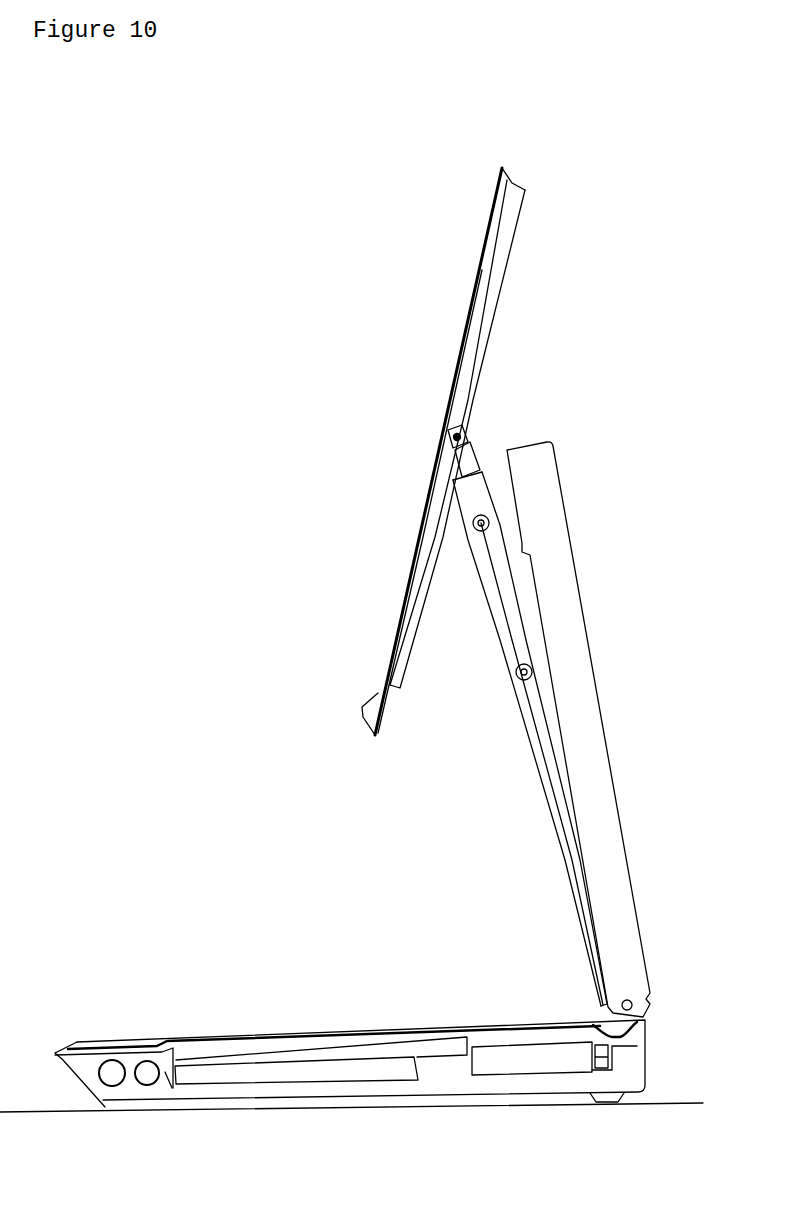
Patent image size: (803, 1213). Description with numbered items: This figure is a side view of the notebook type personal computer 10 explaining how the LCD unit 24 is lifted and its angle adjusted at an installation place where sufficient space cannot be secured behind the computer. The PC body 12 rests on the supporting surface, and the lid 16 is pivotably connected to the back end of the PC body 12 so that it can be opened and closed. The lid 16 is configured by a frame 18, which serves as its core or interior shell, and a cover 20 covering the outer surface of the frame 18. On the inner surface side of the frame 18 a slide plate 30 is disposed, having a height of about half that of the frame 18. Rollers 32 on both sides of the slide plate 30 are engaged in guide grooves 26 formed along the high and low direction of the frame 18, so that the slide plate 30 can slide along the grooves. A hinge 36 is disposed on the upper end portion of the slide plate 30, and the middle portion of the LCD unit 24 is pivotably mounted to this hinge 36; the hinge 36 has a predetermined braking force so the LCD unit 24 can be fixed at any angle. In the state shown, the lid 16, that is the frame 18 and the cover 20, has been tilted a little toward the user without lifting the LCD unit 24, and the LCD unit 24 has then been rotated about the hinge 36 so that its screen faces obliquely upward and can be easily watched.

The notebook type personal computer 10 is at (274, 283).
The PC body 12 is at (432, 1092).
The lid 16 is at (532, 417).
The frame 18 is at (480, 492).
The cover 20 is at (555, 500).
The liquid crystal display unit 24 is at (468, 337).
The guide grooves 26 is at (550, 767).
The slide plate 30 is at (470, 440).
The rollers 32 is at (478, 530).
The hinge 36 is at (450, 447).